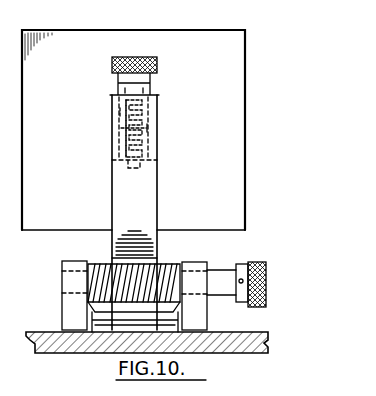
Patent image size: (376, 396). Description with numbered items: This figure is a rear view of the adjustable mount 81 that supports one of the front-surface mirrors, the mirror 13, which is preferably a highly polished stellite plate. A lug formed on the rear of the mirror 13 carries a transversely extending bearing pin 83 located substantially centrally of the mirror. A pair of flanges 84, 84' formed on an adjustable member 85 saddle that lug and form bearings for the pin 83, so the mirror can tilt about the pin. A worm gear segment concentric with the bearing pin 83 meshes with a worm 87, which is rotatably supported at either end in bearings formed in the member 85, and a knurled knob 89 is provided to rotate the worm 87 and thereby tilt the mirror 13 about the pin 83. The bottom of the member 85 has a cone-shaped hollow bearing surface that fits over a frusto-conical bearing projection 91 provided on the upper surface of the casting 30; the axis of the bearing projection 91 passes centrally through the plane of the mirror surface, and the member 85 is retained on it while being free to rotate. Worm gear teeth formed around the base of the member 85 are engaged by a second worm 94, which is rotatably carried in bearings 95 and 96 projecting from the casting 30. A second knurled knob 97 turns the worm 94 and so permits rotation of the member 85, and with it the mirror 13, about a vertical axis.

The mirror 13 is at (245, 122).
The knurled knob 89 is at (156, 61).
The adjustable member 85 is at (112, 176).
The flange 84 is at (155, 128).
The flange 84' is at (100, 112).
The bearing pin 83 is at (121, 128).
The worm 87 is at (148, 128).
The adjustable mount 81 is at (256, 240).
The worm 94 is at (103, 265).
The bearing 95 is at (62, 300).
The bearing 96 is at (207, 315).
The knurled knob 97 is at (266, 284).
The frusto-conical bearing projection 91 is at (125, 322).
The casting 30 is at (268, 345).